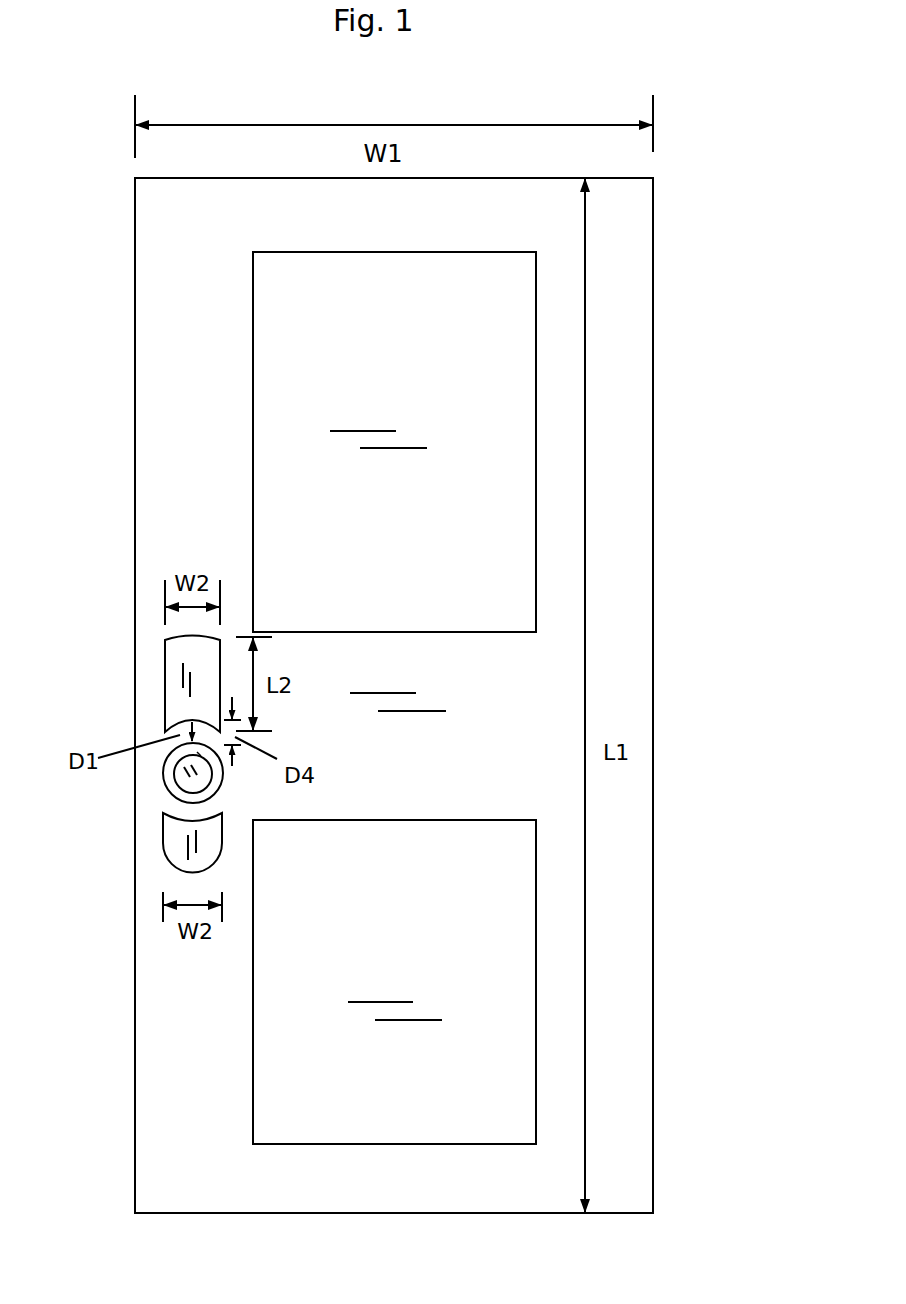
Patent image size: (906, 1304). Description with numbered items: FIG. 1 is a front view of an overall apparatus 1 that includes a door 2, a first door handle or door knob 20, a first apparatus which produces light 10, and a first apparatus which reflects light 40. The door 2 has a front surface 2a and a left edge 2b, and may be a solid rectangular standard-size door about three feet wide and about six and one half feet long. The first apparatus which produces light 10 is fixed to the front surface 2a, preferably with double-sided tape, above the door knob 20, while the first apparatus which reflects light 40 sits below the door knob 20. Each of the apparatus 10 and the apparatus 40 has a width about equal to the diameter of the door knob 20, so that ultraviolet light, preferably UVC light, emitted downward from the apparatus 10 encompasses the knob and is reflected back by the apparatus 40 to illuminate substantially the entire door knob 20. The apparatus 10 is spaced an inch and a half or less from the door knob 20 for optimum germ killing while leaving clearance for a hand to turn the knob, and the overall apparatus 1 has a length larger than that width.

The overall apparatus 1 is at (682, 183).
The door 2 is at (612, 303).
The front surface 2a is at (162, 397).
The left edge 2b is at (135, 485).
The first apparatus which produces light 10 is at (175, 707).
The first door handle or door knob 20 is at (180, 790).
The first apparatus which reflects light 40 is at (172, 857).